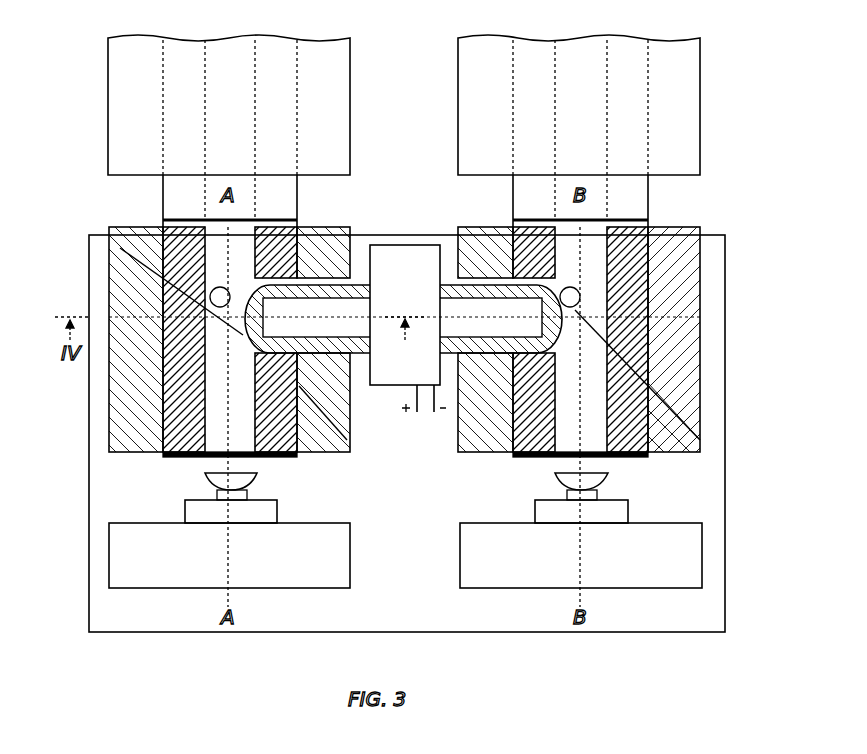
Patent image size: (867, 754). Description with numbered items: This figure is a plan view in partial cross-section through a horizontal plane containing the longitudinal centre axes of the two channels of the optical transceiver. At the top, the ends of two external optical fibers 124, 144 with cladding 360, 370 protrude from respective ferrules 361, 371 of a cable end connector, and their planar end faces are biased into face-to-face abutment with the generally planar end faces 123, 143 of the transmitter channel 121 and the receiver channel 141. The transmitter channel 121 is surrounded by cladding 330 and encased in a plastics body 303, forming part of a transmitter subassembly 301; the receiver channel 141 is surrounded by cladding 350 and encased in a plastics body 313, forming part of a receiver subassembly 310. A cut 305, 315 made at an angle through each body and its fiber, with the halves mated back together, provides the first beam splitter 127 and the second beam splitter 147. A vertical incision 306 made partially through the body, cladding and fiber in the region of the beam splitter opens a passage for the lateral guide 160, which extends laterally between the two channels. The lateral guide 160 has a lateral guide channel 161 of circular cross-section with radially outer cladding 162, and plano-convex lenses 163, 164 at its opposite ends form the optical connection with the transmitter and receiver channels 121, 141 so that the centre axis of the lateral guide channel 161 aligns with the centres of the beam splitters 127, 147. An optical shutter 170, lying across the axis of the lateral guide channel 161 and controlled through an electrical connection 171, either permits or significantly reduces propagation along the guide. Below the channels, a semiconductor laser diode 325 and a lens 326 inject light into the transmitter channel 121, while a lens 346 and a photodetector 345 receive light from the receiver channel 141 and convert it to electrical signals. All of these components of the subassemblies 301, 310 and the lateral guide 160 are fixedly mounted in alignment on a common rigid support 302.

The common rigid support 302 is at (89, 632).
The cladding 360 is at (176, 52).
The external optical fiber 124 is at (230, 50).
The ferrule 361 is at (316, 50).
The ferrule 371 is at (492, 50).
The cladding 370 is at (540, 50).
The external optical fiber 144 is at (583, 50).
The vertical incision 306 is at (248, 283).
The end face 123 is at (245, 215).
The lateral guide 160 is at (354, 285).
The radially outer cladding 162 is at (457, 285).
The end face 143 is at (590, 215).
The cladding 330 is at (165, 268).
The first beam splitter 127 is at (175, 300).
The optical shutter 170 is at (405, 315).
The lateral guide channel 161 is at (440, 310).
The plano-convex lens 163 is at (268, 314).
The plano-convex lens 164 is at (540, 317).
The cladding 350 is at (660, 262).
The second beam splitter 147 is at (650, 302).
The body 313 is at (657, 322).
The receiver subassembly 310 is at (702, 360).
The transmitter subassembly 301 is at (108, 373).
The body 303 is at (125, 430).
The cut 305 is at (352, 418).
The cut 315 is at (692, 415).
The lens 326 is at (205, 473).
The transmitter channel 121 is at (250, 457).
The electrical connection 171 is at (428, 420).
The receiver channel 141 is at (570, 457).
The lens 346 is at (608, 473).
The semiconductor laser diode 325 is at (185, 505).
The photodetector 345 is at (628, 505).